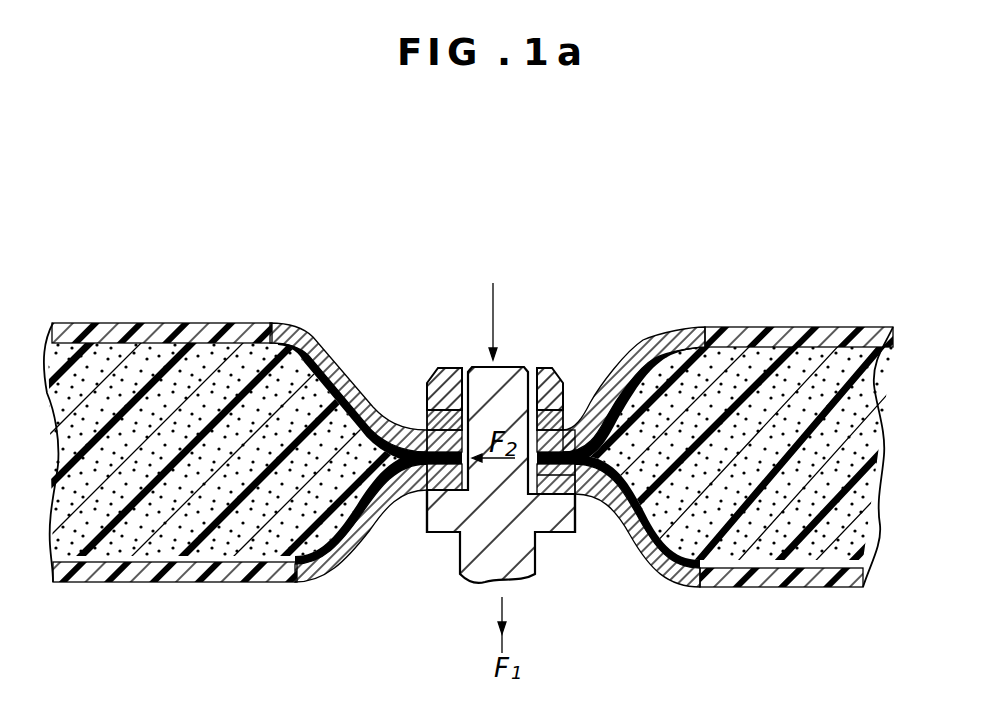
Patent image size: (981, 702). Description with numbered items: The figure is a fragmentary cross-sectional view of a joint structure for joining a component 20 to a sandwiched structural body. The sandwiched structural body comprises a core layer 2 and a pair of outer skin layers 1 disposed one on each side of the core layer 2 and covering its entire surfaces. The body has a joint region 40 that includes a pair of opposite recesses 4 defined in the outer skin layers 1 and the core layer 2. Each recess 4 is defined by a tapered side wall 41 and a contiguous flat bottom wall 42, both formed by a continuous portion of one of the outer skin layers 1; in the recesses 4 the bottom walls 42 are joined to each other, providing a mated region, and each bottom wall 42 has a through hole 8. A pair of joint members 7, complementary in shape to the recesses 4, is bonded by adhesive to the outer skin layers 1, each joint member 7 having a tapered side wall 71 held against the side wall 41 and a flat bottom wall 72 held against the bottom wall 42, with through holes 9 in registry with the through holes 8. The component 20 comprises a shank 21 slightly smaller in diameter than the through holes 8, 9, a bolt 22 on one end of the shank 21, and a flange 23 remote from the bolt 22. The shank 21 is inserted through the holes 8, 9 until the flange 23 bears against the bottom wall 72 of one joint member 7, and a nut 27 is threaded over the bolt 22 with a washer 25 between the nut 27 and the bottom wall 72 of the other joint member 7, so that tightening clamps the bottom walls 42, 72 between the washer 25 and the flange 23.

The outer skin layer 1 is at (182, 333).
The core layer 2 is at (103, 357).
The recess 4 is at (478, 450).
The tapered side wall 41 is at (375, 400).
The flat bottom wall 42 is at (390, 445).
The joint member 7 is at (523, 463).
The tapered side wall 71 is at (592, 412).
The flat bottom wall 72 is at (572, 445).
The through hole 8 is at (425, 424).
The through hole 9 is at (533, 492).
The component 20 is at (470, 588).
The shank 21 is at (524, 500).
The bolt 22 is at (480, 378).
The flange 23 is at (440, 512).
The washer 25 is at (550, 432).
The nut 27 is at (545, 411).
The joint region 40 is at (492, 307).